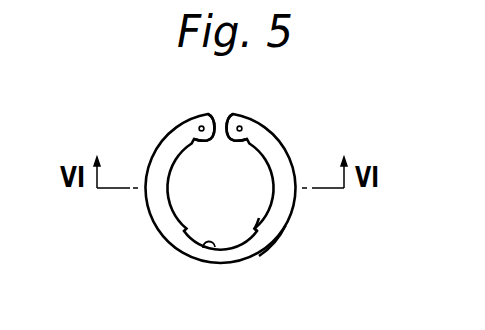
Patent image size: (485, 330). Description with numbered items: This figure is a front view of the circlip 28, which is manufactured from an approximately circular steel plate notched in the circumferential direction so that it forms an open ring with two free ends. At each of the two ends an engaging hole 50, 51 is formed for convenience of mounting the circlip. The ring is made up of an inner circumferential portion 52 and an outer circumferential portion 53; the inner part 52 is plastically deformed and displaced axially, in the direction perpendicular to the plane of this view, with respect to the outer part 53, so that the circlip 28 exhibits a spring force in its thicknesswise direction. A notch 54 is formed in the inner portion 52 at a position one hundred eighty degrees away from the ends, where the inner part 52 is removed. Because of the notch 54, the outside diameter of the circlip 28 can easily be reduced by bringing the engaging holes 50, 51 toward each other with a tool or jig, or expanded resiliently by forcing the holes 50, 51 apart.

The circlip 28 is at (282, 195).
The engaging hole 50 is at (201, 129).
The engaging hole 51 is at (240, 129).
The inner circumferential portion 52 is at (261, 219).
The outer circumferential portion 53 is at (276, 232).
The notch 54 is at (213, 240).